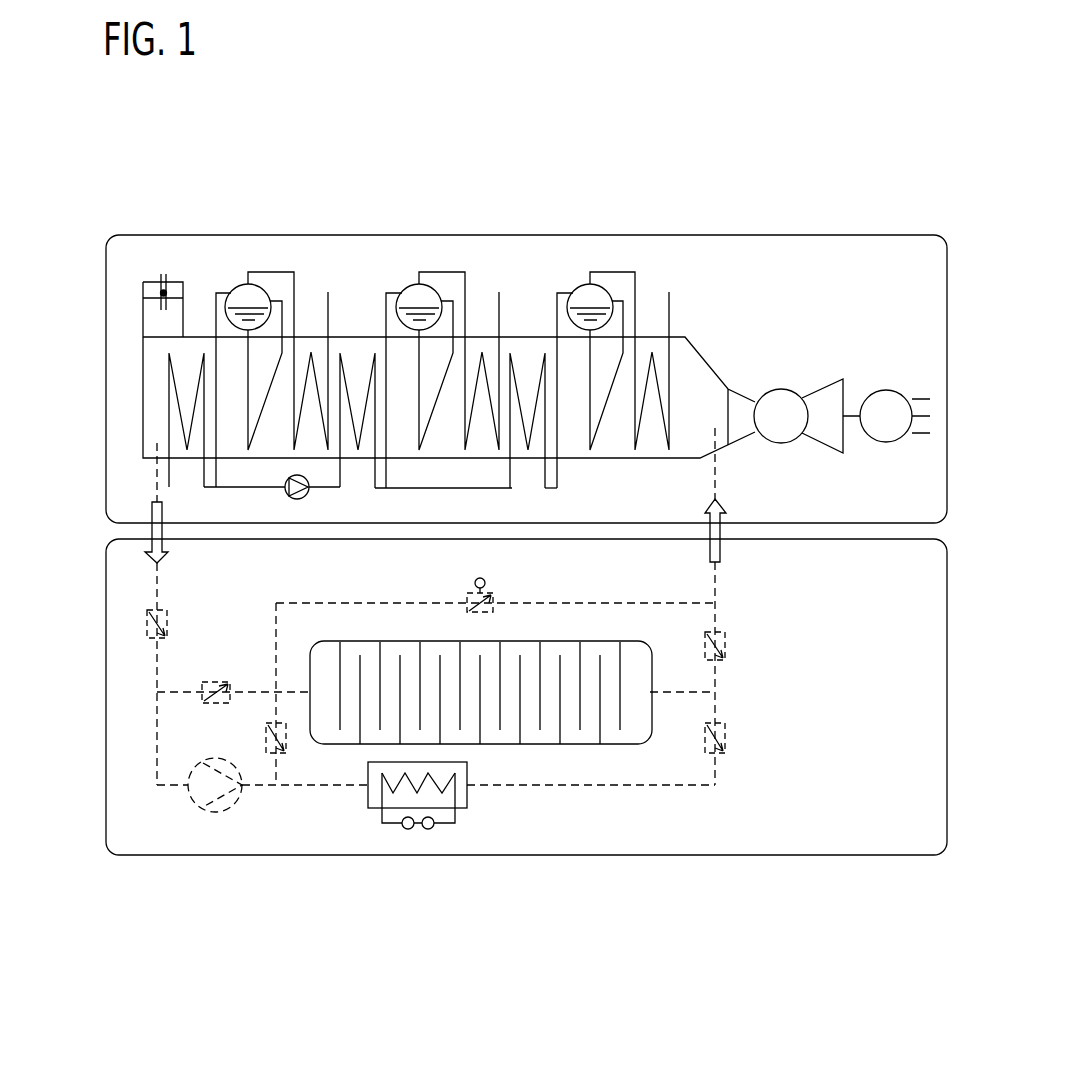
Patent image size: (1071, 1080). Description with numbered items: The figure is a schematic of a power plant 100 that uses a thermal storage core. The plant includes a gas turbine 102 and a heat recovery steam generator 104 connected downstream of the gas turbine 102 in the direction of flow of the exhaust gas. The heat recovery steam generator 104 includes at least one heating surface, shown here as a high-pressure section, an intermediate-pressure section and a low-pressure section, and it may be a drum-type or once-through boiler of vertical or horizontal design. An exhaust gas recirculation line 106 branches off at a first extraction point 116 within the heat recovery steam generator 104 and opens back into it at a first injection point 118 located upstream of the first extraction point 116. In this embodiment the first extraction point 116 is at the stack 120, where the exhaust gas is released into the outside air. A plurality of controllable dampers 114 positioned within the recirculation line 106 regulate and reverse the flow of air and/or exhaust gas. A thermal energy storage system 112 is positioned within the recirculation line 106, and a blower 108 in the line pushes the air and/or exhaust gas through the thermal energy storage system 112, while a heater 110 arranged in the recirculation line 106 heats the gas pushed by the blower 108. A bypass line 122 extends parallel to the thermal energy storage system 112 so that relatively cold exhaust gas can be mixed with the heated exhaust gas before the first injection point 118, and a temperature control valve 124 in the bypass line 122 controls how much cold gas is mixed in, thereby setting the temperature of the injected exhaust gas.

The power plant 100 is at (753, 120).
The gas turbine 102 is at (802, 352).
The heat recovery steam generator 104 is at (222, 215).
The exhaust gas recirculation line 106 is at (157, 585).
The blower 108 is at (215, 812).
The heater 110 is at (368, 808).
The thermal energy storage system 112 is at (538, 744).
The controllable dampers 114 is at (147, 623).
The first extraction point 116 is at (157, 443).
The first injection point 118 is at (714, 428).
The stack 120 is at (157, 335).
The bypass line 122 is at (368, 602).
The temperature control valve 124 is at (493, 598).